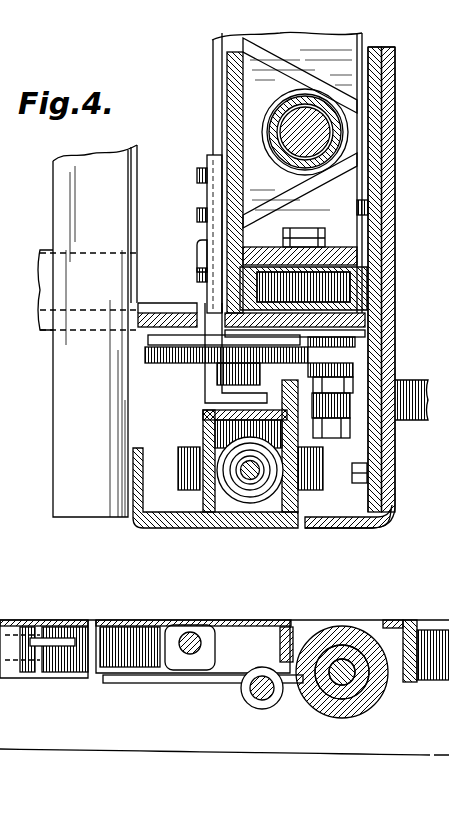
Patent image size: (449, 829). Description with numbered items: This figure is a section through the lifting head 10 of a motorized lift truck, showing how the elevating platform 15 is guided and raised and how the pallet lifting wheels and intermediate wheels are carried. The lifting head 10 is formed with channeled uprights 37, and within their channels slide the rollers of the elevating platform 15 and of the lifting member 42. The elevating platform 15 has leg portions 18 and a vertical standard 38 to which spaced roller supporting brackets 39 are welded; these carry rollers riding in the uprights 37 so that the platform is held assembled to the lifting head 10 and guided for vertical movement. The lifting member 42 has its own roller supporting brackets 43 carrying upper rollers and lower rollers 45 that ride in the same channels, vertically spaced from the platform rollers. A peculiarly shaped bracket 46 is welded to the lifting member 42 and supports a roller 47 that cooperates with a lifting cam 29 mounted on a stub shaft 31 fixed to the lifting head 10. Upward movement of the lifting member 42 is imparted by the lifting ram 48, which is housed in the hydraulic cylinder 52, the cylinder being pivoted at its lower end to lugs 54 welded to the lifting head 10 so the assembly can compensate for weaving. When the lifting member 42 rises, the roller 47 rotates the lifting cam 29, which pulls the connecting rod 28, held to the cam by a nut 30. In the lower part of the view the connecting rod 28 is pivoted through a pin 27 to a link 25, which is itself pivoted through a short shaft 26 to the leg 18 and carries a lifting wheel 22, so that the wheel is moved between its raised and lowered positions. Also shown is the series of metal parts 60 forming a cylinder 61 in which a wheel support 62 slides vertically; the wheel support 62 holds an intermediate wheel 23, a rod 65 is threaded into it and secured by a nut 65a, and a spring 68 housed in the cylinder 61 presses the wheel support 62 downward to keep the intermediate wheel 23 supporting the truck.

The lifting head 10 is at (46, 369).
The elevating platform 15 is at (406, 262).
The leg portions 18 is at (118, 615).
The lifting wheels 22 is at (300, 706).
The intermediate wheel 23 is at (180, 472).
The link 25 is at (228, 660).
The short shaft 26 is at (190, 658).
The pin 27 is at (250, 702).
The connecting rod 28 is at (410, 420).
The lifting cam 29 is at (160, 363).
The nut 30 is at (352, 440).
The stub shaft 31 is at (360, 378).
The channeled uprights 37 is at (366, 320).
The vertical standard 38 is at (362, 170).
The roller supporting brackets 39 is at (367, 253).
The lifting member 42 is at (226, 118).
The roller supporting brackets 43 is at (197, 239).
The lower rollers 45 is at (303, 288).
The bracket 46 is at (197, 191).
The roller 47 is at (222, 398).
The lifting ram 48 is at (345, 118).
The hydraulic cylinder 52 is at (330, 136).
The lugs 54 is at (222, 137).
The metal parts 60 is at (205, 418).
The cylinder 61 is at (205, 528).
The wheel support 62 is at (222, 512).
The rod 65 is at (300, 526).
The nut 65a is at (285, 500).
The spring 68 is at (252, 481).